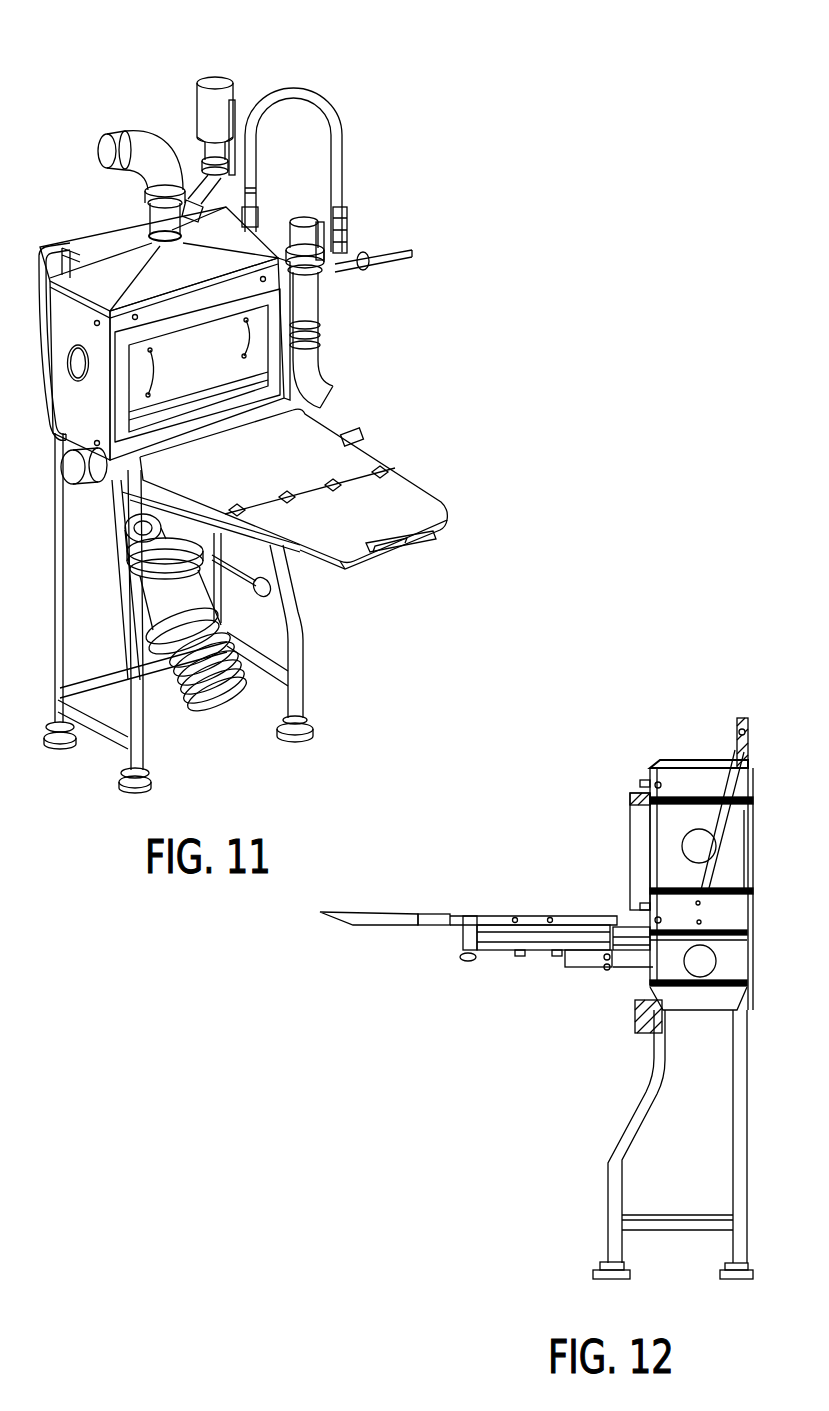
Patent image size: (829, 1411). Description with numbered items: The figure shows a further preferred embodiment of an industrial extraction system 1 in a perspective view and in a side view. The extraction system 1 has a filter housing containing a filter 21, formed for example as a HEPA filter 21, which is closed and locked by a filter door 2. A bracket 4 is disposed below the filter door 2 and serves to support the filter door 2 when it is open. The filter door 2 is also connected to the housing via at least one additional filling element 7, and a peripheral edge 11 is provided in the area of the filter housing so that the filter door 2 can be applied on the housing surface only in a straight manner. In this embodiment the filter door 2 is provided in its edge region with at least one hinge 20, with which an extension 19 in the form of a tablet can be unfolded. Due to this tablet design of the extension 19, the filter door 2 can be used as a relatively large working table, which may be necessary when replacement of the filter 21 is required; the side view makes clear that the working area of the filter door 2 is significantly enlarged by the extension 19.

In FIG. 12, the industrial extraction system 1 is at (698, 753).
In FIG. 11, the filter door 2 is at (325, 440).
In FIG. 12, the filter door 2 is at (530, 928).
In FIG. 11, the bracket 4 is at (181, 702).
In FIG. 12, the filling element 7 is at (630, 930).
In FIG. 12, the peripheral edge 11 is at (630, 807).
In FIG. 11, the extension 19 is at (413, 498).
In FIG. 12, the extension 19 is at (395, 918).
In FIG. 11, the hinge 20 is at (385, 472).
In FIG. 12, the hinge 20 is at (450, 917).
In FIG. 11, the filter 21 is at (228, 365).